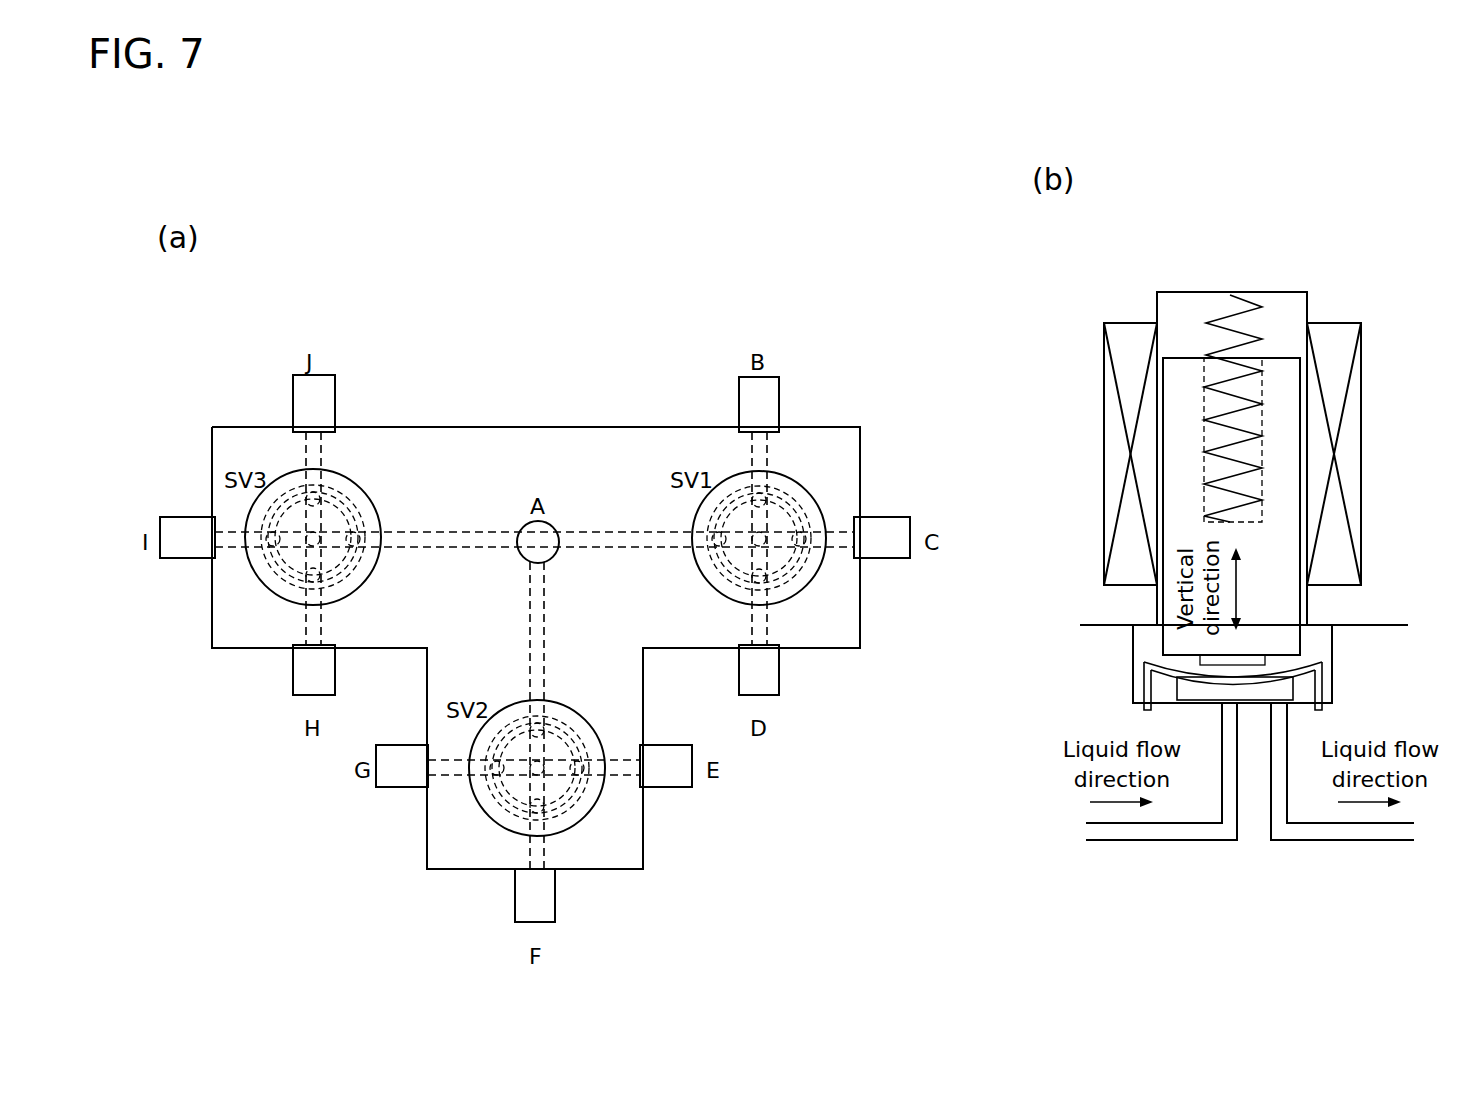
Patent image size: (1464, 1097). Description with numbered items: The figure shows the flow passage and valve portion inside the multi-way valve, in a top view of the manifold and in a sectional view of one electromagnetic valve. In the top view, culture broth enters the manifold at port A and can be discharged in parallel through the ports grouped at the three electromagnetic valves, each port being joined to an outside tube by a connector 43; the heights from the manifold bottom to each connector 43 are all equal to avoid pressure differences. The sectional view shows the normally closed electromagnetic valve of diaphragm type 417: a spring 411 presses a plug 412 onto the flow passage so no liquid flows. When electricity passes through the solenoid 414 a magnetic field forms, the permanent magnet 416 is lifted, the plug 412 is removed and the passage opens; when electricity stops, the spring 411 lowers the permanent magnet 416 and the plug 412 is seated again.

The connector 43 is at (740, 407).
The spring 411 is at (1230, 310).
The plug 412 is at (1250, 698).
The solenoid 414 is at (1355, 446).
The permanent magnet 416 is at (1170, 358).
The diaphragm type 417 is at (1144, 677).